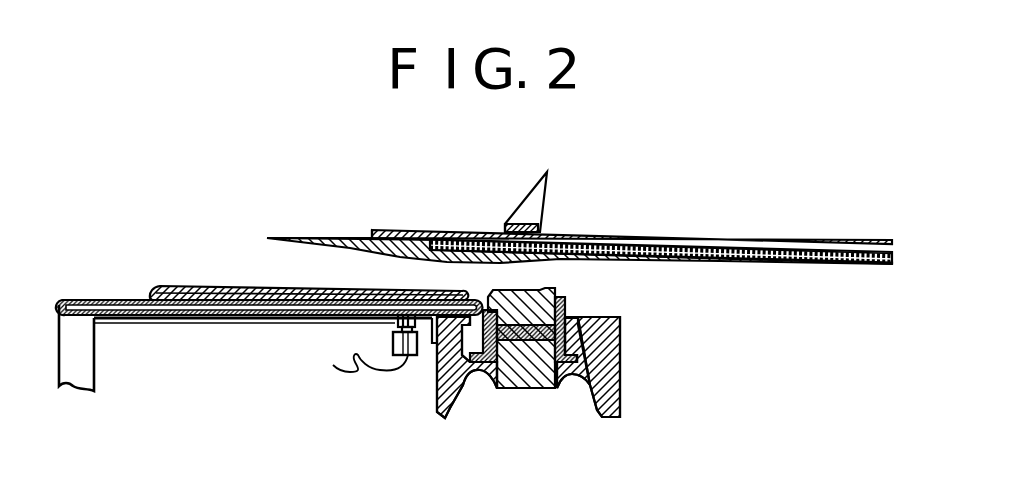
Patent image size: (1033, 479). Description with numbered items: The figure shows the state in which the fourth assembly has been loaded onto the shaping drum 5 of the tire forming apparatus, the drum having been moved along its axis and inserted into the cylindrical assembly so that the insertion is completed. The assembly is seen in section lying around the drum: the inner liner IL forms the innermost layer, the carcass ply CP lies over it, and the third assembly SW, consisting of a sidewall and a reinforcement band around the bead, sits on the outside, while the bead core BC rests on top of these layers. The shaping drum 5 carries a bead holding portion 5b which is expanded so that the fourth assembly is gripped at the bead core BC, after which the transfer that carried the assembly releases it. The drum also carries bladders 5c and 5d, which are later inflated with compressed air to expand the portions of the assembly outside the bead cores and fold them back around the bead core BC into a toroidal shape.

The shaping drum 5 is at (430, 398).
The bead holding portion 5b is at (522, 292).
The bladder 5c is at (203, 287).
The bladder 5d is at (120, 299).
The third assembly SW is at (318, 242).
The carcass ply CP is at (757, 240).
The bead core BC is at (547, 198).
The inner liner IL is at (731, 262).